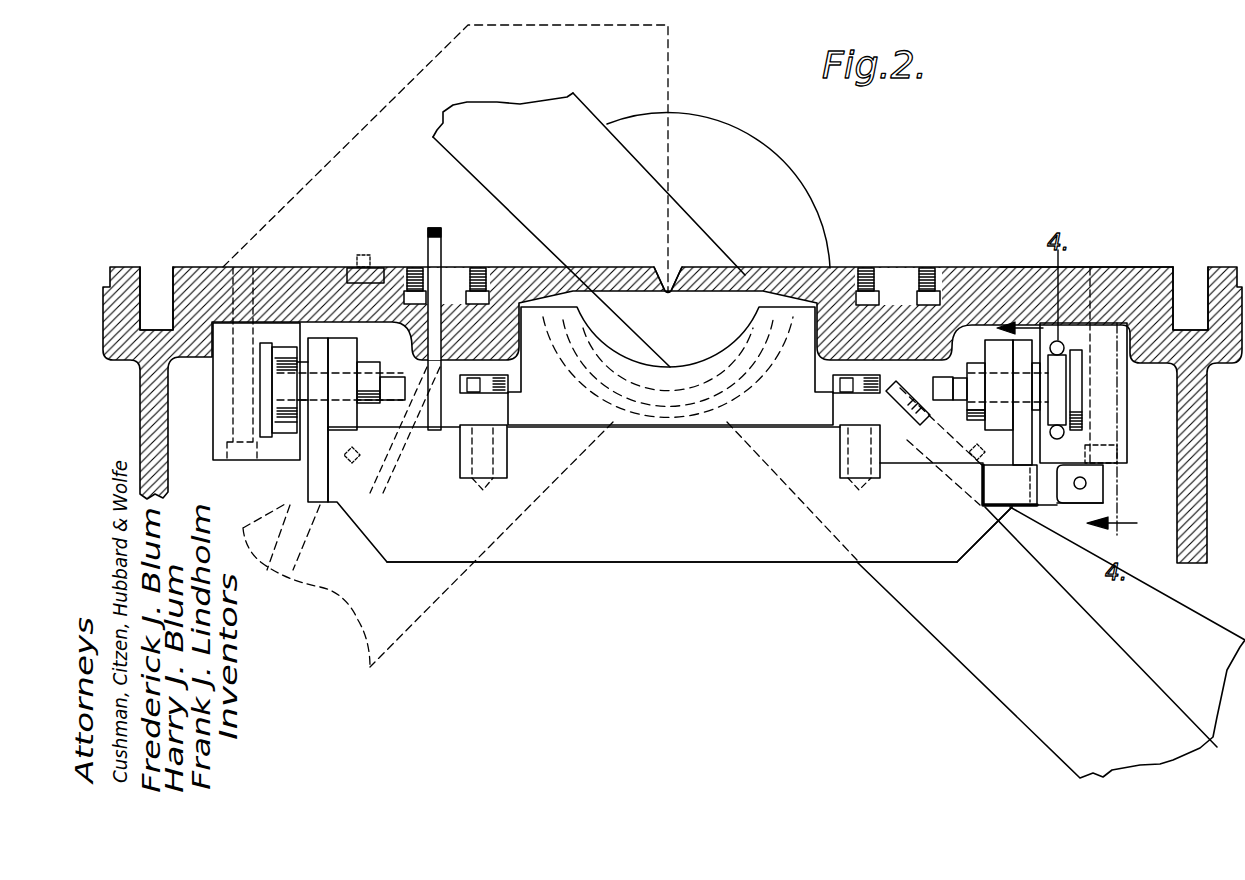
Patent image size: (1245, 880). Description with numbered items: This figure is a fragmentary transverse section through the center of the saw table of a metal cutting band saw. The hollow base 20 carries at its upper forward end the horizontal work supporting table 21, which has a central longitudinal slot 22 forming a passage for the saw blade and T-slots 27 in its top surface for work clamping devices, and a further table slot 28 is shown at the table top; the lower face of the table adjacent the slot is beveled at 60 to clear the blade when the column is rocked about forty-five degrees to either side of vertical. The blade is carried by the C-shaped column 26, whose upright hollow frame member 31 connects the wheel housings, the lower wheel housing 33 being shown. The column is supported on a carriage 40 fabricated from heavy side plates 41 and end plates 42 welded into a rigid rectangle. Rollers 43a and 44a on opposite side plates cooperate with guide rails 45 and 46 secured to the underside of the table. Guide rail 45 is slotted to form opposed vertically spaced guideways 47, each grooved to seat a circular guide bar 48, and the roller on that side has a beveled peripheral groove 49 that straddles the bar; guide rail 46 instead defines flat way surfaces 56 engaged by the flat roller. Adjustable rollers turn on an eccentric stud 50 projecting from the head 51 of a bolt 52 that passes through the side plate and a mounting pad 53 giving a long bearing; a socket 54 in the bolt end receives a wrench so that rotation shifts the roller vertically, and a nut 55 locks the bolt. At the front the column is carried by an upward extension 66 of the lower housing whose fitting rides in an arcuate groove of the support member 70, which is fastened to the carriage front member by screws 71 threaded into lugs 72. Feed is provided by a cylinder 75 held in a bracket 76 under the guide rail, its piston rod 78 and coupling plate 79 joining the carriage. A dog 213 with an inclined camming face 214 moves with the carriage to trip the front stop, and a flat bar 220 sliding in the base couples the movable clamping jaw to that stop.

The base 20 is at (1210, 473).
The work supporting table 21 is at (1103, 264).
The central longitudinal slot 22 is at (676, 268).
The C-shaped column 26 is at (468, 177).
The T-slots 27 is at (454, 290).
The T-slot 28 is at (158, 280).
The hollow frame member 31 is at (582, 122).
The lower wheel housing 33 is at (1203, 633).
The carriage 40 is at (653, 565).
The side plates 41 is at (338, 340).
The end plates 42 is at (803, 547).
The roller 43a is at (1085, 382).
The roller 44a is at (282, 433).
The guide rail 45 is at (1117, 423).
The guide rail 46 is at (240, 420).
The guideways 47 is at (1080, 347).
The guide bar 48 is at (1059, 342).
The peripheral grooves 49 is at (1057, 393).
The eccentric pin or stud 50 is at (277, 388).
The head 51 is at (1037, 377).
The bolt 52 is at (397, 377).
The mounting plate or pad 53 is at (1023, 413).
The socket 54 is at (933, 392).
The nut 55 is at (970, 392).
The flat way surfaces 56 is at (260, 348).
The beveled lower face 60 is at (672, 296).
The upward extension 66 is at (873, 568).
The support member 70 is at (842, 352).
The screws 71 is at (510, 387).
The lugs 72 is at (505, 457).
The cylinder 75 is at (1077, 507).
The bracket 76 is at (1100, 495).
The piston rod 78 is at (1088, 483).
The coupling plate 79 is at (987, 507).
The dog 213 is at (437, 263).
The inclined camming face 214 is at (430, 228).
The elongated flat bar 220 is at (373, 278).